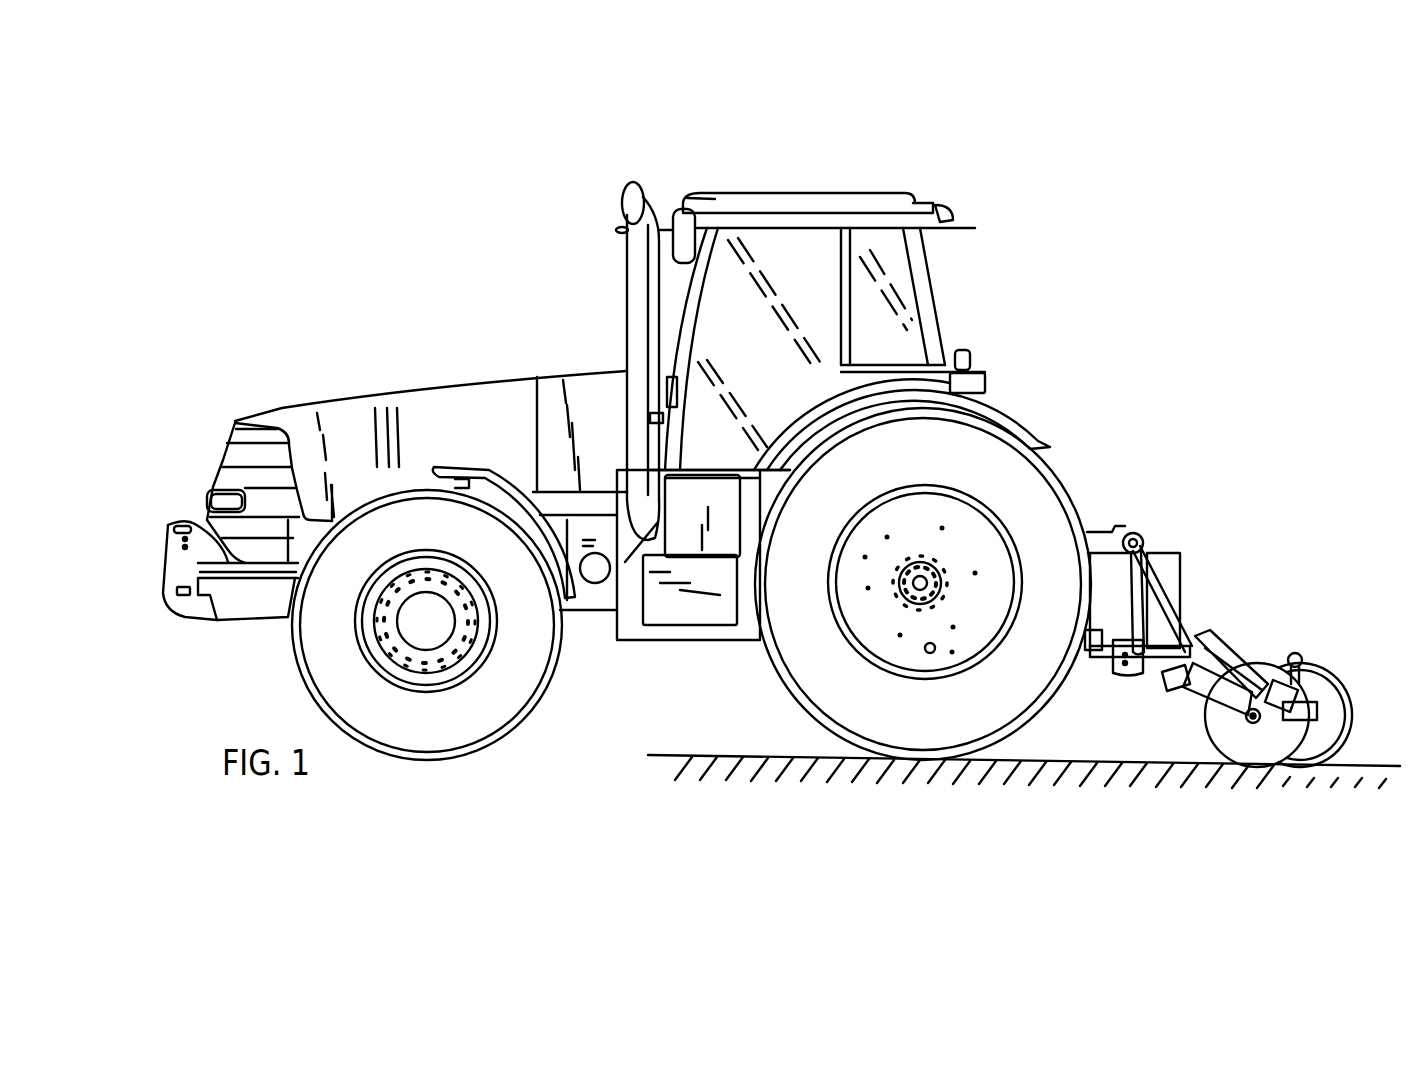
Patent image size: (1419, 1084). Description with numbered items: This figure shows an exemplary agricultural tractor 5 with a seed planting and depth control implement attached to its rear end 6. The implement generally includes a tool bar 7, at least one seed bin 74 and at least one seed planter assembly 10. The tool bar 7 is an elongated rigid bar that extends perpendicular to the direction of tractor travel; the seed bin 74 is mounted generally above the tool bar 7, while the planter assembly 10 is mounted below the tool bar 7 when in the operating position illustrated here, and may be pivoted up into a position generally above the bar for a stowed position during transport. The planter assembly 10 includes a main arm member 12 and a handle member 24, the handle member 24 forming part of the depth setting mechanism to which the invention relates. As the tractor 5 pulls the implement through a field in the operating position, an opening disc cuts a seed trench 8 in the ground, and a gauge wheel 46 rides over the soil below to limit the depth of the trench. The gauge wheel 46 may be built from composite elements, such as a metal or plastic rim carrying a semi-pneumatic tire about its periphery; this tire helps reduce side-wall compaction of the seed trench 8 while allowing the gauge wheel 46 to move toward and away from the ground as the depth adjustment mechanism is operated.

The agricultural tractor 5 is at (607, 155).
The rear end 6 is at (1135, 529).
The tool bar 7 is at (1192, 643).
The seed bin 74 is at (1182, 570).
The seed planter assembly 10 is at (1190, 719).
The main arm member 12 is at (1202, 692).
The handle member 24 is at (1310, 670).
The gauge wheel 46 is at (1337, 722).
The seed trench 8 is at (1222, 764).